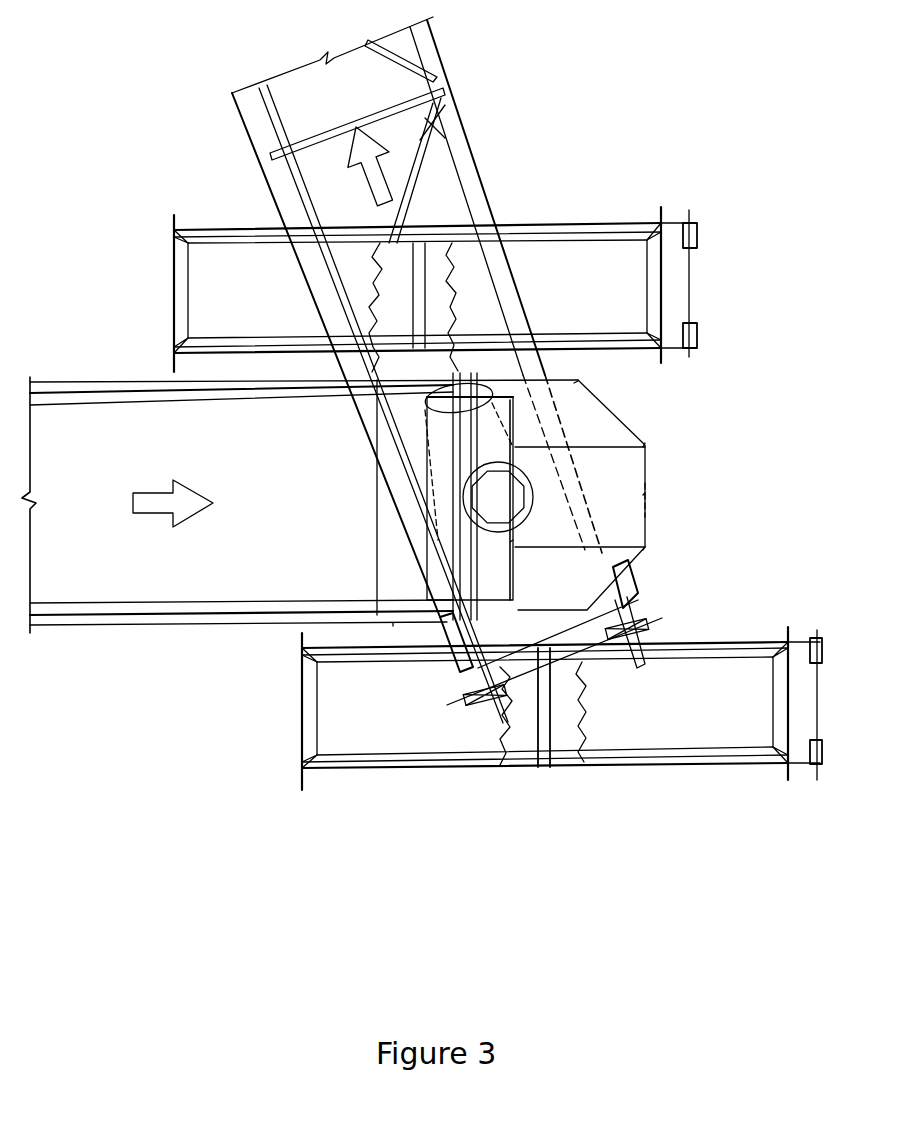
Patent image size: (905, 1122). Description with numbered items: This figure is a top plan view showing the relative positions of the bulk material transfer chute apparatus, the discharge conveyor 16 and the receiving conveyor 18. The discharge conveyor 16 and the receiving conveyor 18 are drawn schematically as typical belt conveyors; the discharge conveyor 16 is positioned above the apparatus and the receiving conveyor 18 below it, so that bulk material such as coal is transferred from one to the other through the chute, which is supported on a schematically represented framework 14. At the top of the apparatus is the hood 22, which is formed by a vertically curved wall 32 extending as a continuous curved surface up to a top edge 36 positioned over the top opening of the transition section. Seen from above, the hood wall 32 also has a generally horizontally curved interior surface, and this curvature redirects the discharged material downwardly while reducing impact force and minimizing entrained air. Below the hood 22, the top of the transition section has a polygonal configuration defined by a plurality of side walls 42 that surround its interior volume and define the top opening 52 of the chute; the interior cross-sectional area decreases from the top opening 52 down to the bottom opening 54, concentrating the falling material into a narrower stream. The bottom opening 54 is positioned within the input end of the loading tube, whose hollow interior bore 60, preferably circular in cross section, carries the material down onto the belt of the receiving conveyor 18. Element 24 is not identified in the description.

The framework 14 is at (593, 225).
The discharge conveyor 16 is at (118, 630).
The receiving conveyor 18 is at (464, 104).
The hood 22 is at (627, 470).
The frame member 24 is at (393, 623).
The vertically curved wall 32 is at (628, 525).
The top edge 36 is at (513, 540).
The side walls 42 is at (580, 380).
The top opening 52 is at (388, 500).
The bottom opening 54 is at (503, 489).
The hollow interior bore 60 is at (503, 505).